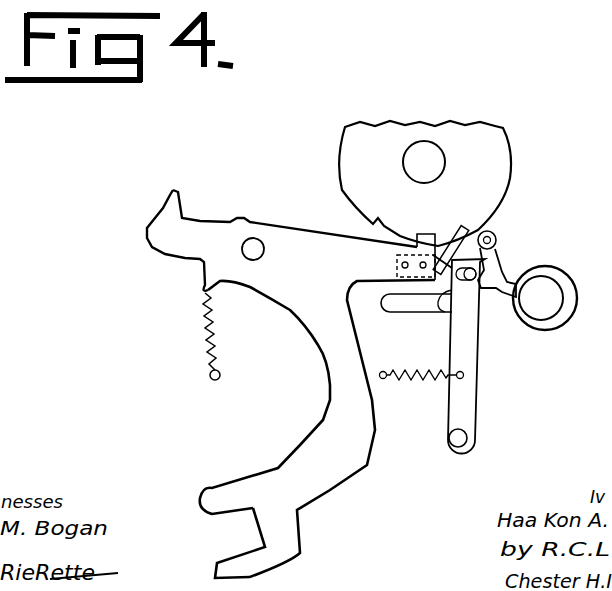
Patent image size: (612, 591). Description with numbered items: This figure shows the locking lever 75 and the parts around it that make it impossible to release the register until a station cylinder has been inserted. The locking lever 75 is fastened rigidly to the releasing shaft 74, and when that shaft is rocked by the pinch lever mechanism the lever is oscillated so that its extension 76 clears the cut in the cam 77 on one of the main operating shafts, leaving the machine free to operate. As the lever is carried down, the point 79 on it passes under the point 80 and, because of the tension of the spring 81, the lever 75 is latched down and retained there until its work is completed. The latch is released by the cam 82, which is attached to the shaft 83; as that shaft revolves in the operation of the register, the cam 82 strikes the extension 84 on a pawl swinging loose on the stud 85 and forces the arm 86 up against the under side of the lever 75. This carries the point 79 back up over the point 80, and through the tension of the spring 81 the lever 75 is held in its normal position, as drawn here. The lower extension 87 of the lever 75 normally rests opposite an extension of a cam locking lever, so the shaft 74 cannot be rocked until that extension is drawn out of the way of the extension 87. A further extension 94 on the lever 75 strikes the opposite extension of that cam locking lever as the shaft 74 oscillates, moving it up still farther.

The shaft 74 is at (251, 246).
The locking lever 75 is at (293, 240).
The extension 76 is at (430, 240).
The cam 77 is at (494, 177).
The point 79 is at (457, 238).
The point 80 is at (438, 304).
The spring 81 is at (416, 378).
The cam 82 is at (527, 322).
The shaft 83 is at (553, 298).
The extension 84 is at (500, 274).
The stud 85 is at (492, 240).
The arm 86 is at (403, 306).
The extension 87 is at (229, 572).
The extension 94 is at (215, 495).